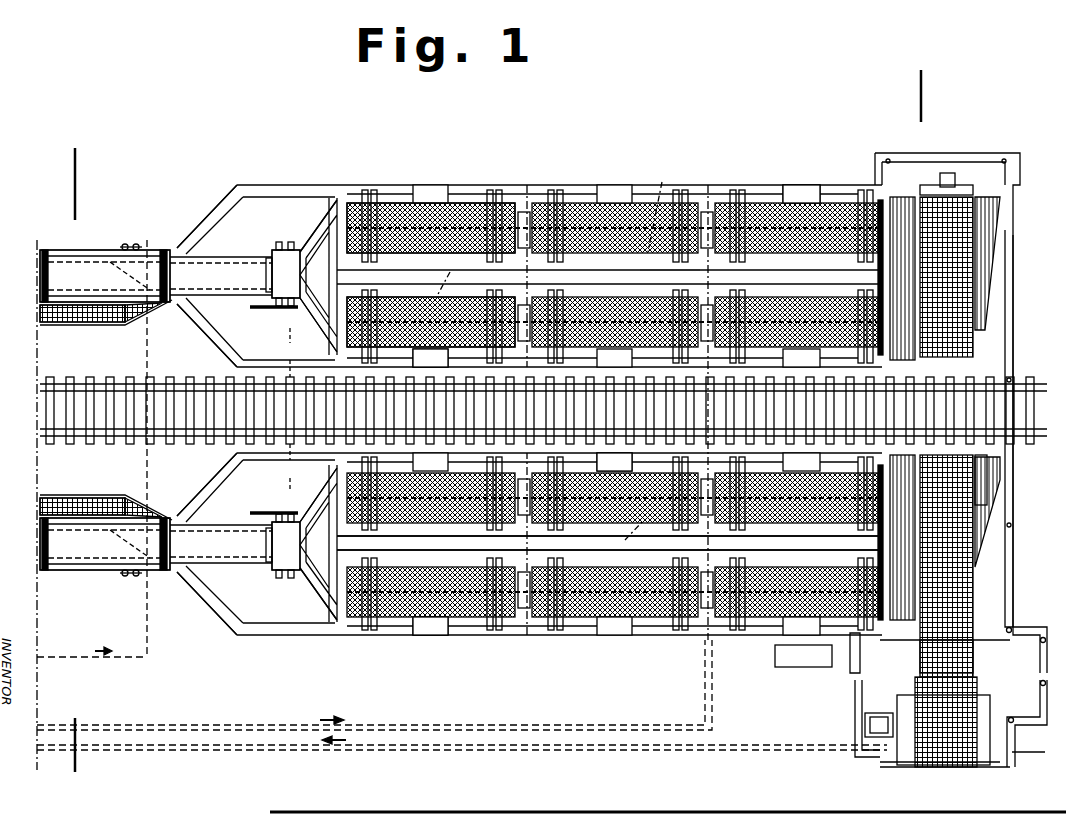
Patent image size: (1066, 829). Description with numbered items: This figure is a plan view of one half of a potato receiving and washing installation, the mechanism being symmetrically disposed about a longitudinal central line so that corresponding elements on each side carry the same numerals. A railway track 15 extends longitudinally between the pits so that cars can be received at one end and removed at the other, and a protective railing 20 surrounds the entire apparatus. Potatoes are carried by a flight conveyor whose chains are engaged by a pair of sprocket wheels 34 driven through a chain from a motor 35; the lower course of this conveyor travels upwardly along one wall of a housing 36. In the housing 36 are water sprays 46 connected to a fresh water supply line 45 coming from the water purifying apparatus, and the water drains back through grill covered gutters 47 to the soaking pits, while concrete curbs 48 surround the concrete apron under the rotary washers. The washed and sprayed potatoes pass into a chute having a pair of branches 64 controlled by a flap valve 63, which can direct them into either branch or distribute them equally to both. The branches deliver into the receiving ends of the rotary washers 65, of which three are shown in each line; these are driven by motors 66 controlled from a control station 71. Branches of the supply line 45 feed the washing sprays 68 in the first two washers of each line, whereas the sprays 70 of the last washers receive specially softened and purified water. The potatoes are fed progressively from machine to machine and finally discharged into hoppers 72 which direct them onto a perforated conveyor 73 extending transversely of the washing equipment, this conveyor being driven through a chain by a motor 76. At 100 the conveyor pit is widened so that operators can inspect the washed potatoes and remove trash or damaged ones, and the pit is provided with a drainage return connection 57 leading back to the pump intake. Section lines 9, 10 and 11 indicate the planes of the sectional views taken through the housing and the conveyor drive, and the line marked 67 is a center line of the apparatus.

The section line 9- 9 is at (66, 163).
The section line 10- 10 is at (912, 90).
The section line 11- 11 is at (835, 735).
The railway track 15 is at (1022, 438).
The protective railing 20 is at (1013, 595).
The sprocket wheels 34 is at (268, 309).
The motor 35 is at (308, 304).
The housing 36 is at (77, 262).
The fresh water supply line 45 is at (103, 660).
The water sprays 46 is at (145, 277).
The grill covered gutters 47 is at (92, 322).
The concrete curbs 48 is at (221, 339).
The drainage return connection 57 is at (198, 753).
The flap valve 63 is at (236, 725).
The chute branches 64 is at (313, 237).
The rotary washers 65 is at (412, 300).
The motors 66 is at (616, 410).
The axis line 67 is at (290, 410).
The washing sprays 68 is at (557, 350).
The sprays 70 is at (778, 562).
The control station 71 is at (797, 656).
The hoppers 72 is at (993, 533).
The perforated conveyor 73 is at (968, 488).
The motor 76 is at (874, 712).
The widened pit portion 100 is at (1030, 667).